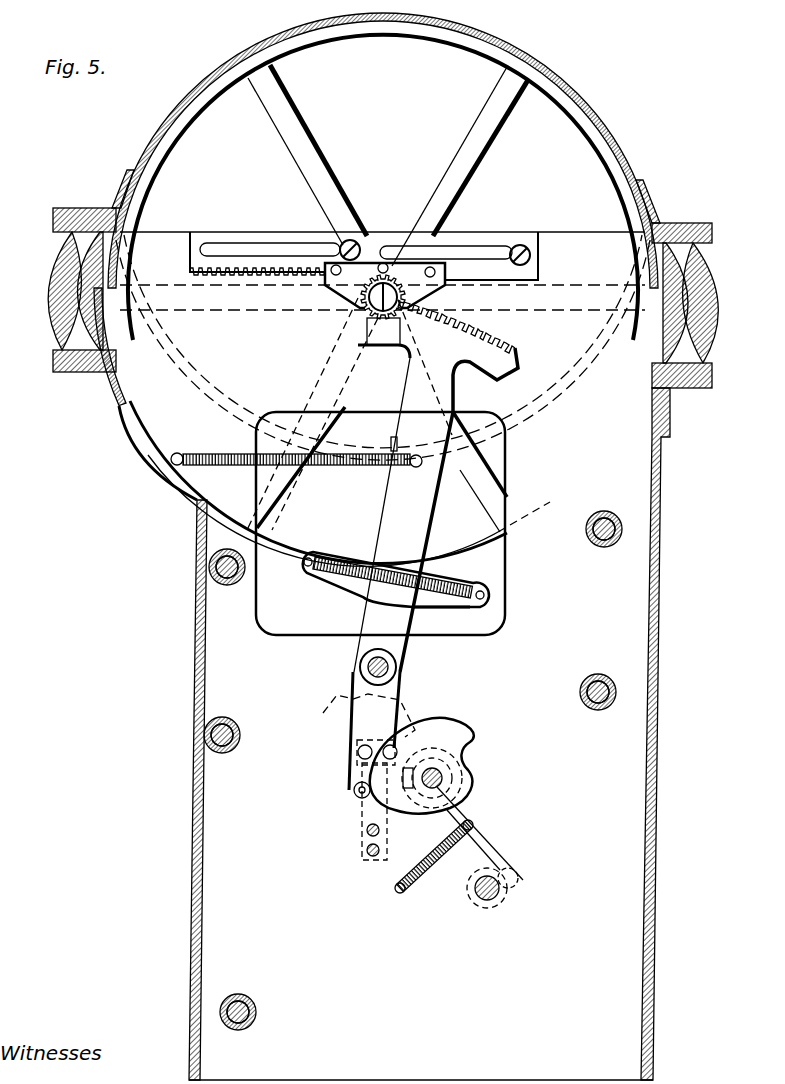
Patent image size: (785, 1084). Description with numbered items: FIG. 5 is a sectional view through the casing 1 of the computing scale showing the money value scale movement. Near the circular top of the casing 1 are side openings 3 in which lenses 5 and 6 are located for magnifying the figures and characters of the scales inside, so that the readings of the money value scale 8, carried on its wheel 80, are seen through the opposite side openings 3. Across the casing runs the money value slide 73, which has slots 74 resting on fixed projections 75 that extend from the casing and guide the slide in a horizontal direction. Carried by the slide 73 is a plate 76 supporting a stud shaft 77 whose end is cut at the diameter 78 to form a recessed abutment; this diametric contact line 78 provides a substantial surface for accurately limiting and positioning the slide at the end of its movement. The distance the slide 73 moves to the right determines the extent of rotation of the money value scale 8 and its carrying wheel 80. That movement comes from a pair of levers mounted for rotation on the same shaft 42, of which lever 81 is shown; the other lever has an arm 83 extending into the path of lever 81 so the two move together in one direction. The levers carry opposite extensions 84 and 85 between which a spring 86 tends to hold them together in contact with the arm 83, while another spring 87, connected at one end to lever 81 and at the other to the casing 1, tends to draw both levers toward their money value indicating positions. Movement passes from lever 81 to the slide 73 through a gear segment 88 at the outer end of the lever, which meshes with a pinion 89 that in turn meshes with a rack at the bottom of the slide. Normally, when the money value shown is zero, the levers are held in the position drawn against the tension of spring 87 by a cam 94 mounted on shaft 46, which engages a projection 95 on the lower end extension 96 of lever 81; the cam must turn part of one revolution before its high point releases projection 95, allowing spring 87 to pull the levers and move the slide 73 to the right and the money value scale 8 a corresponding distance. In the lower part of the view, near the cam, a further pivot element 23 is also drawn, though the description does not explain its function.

The casing 1 is at (190, 500).
The side opening 3 is at (55, 222).
The lens 5 is at (65, 322).
The lens 6 is at (50, 258).
The money value scale 8 is at (222, 82).
The pivot bolt 23 is at (480, 890).
The shaft 42 is at (357, 665).
The shaft 46 is at (442, 785).
The money value slide 73 is at (376, 232).
The slot 74 is at (235, 246).
The fixed projection 75 is at (344, 242).
The plate 76 is at (345, 300).
The stud shaft 77 is at (384, 262).
The diametric contact line 78 is at (388, 346).
The carrying wheel 80 is at (278, 90).
The lever 81 is at (428, 505).
The arm 83 is at (390, 441).
The extension 84 is at (447, 607).
The extension 85 is at (343, 547).
The spring 86 is at (340, 572).
The spring 87 is at (213, 454).
The gear segment 88 is at (495, 332).
The pinion 89 is at (362, 322).
The cam 94 is at (470, 745).
The projection 95 is at (355, 790).
The lower end extension 96 is at (357, 740).